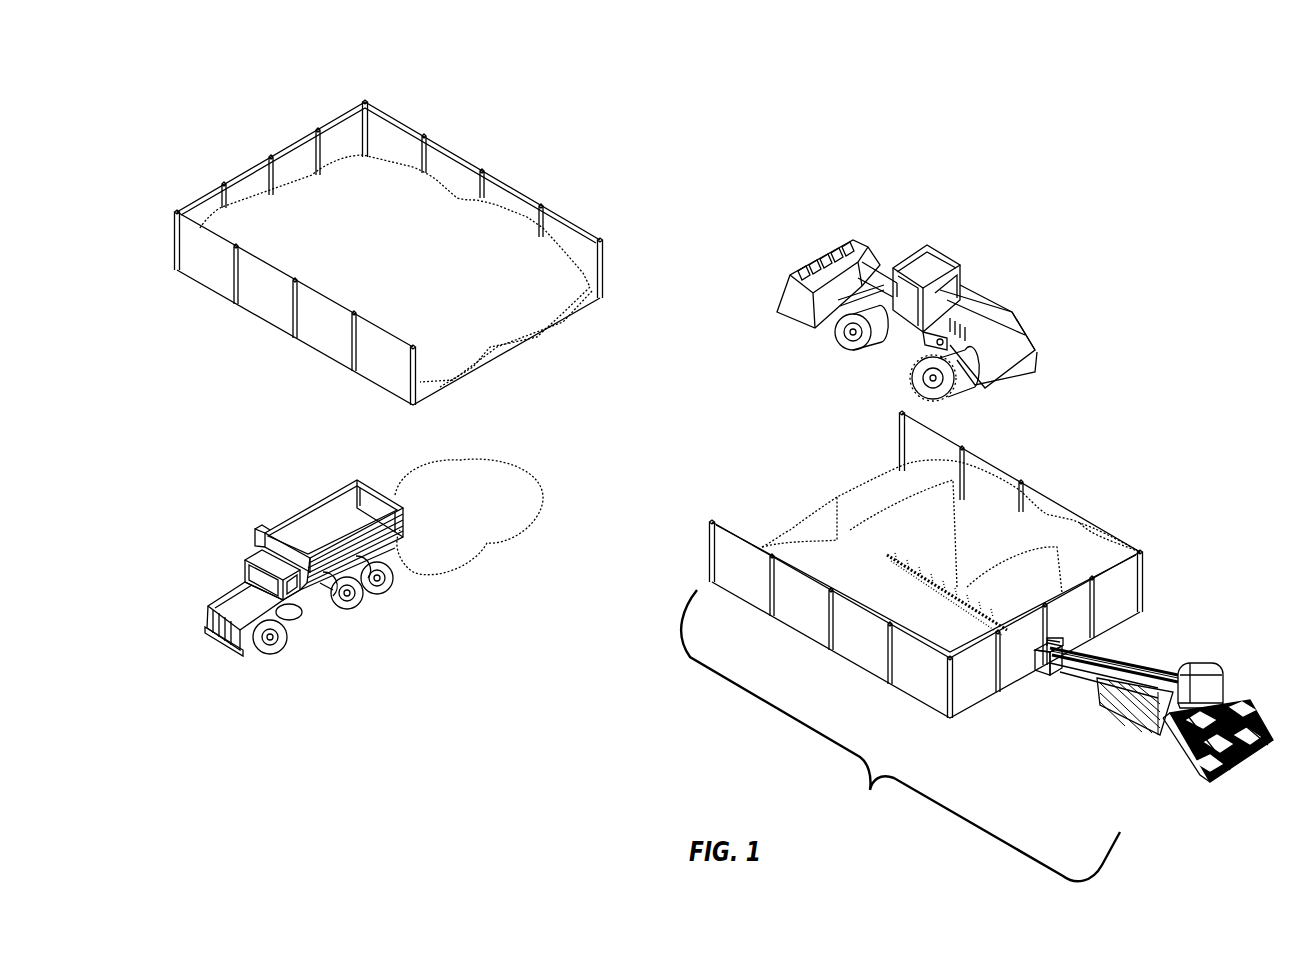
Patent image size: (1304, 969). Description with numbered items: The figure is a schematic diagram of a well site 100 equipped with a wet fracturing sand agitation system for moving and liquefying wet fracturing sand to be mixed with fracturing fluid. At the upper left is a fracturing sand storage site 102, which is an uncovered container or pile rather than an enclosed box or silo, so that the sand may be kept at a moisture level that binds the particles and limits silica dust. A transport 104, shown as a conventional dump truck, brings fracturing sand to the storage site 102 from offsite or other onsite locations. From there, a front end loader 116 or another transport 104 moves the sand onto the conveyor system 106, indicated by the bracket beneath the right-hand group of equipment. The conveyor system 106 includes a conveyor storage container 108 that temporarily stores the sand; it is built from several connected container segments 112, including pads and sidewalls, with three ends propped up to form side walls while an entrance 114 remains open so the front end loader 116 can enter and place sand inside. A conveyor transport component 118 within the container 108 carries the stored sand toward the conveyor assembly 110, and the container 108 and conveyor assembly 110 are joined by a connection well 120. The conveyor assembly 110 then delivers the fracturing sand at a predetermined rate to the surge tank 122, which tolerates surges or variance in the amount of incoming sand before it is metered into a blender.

The well site 100 is at (950, 135).
The fracturing sand storage site 102 is at (485, 177).
The transport 104 is at (380, 600).
The conveyor system 106 is at (900, 735).
The conveyor storage container 108 is at (916, 553).
The conveyor assembly 110 is at (1154, 693).
The container segment 112 is at (743, 573).
The entrance 114 is at (835, 523).
The front end loader 116 is at (975, 278).
The conveyor transport component 118 is at (912, 562).
The connection well 120 is at (1037, 675).
The surge tank 122 is at (1187, 737).